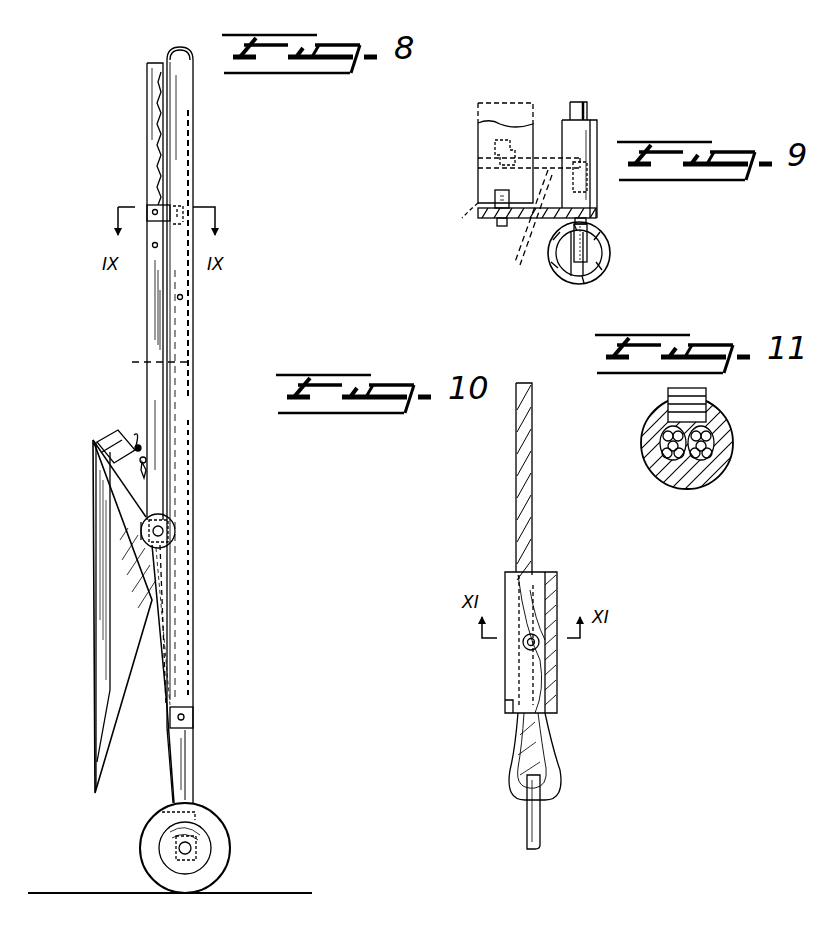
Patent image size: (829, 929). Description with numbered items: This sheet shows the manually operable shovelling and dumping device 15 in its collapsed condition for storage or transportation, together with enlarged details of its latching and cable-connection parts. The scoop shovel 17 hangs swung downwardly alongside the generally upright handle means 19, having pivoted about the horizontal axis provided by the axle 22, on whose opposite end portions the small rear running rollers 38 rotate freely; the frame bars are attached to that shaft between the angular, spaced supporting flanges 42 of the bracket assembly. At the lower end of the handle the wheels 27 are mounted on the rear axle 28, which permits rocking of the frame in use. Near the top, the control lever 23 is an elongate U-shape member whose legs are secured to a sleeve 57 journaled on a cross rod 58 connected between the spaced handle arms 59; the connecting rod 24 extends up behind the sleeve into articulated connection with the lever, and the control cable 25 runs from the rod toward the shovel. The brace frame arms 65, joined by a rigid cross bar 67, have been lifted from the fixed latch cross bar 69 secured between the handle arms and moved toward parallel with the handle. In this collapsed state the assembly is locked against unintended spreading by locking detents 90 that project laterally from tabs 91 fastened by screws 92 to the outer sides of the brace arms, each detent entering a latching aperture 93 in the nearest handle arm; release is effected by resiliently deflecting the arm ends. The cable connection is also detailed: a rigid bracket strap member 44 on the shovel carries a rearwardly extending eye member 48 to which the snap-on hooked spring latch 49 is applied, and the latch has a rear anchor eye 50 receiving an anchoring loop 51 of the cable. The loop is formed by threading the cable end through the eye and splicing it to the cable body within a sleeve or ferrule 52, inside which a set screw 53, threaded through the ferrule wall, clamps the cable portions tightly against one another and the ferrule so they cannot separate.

In FIG. 8, the shovelling and dumping device 15 is at (207, 512).
In FIG. 8, the scoop shovel 17 is at (90, 642).
In FIG. 8, the handle means 19 is at (180, 55).
In FIG. 8, the axle 22 is at (162, 534).
In FIG. 8, the control lever 23 is at (180, 44).
In FIG. 8, the connecting rod 24 is at (146, 360).
In FIG. 8, the control cable 25 is at (136, 483).
In FIG. 10, the control cable 25 is at (517, 495).
In FIG. 11, the control cable 25 is at (668, 440).
In FIG. 8, the wheels 27 is at (207, 822).
In FIG. 8, the axle 28 is at (192, 845).
In FIG. 8, the rear running rollers 38 is at (167, 531).
In FIG. 8, the supporting flanges 42 is at (143, 528).
In FIG. 8, the bracket strap member 44 is at (110, 437).
In FIG. 8, the eye member 48 is at (134, 440).
In FIG. 8, the hooked spring latch 49 is at (146, 452).
In FIG. 10, the anchor eye 50 is at (528, 820).
In FIG. 10, the anchoring loop 51 is at (553, 770).
In FIG. 8, the ferrule 52 is at (147, 470).
In FIG. 10, the ferrule 52 is at (557, 598).
In FIG. 11, the ferrule 52 is at (690, 488).
In FIG. 10, the set screw 53 is at (524, 648).
In FIG. 11, the set screw 53 is at (702, 396).
In FIG. 9, the sleeve 57 is at (584, 132).
In FIG. 9, the cross rod 58 is at (576, 255).
In FIG. 9, the handle arms 59 is at (608, 262).
In FIG. 8, the brace frame arms 65 is at (150, 300).
In FIG. 9, the brace frame arms 65 is at (478, 210).
In FIG. 9, the cross bar 67 is at (480, 148).
In FIG. 8, the latch cross bar 69 is at (194, 712).
In FIG. 9, the locking detents 90 is at (598, 190).
In FIG. 8, the tabs 91 is at (160, 210).
In FIG. 9, the tabs 91 is at (527, 219).
In FIG. 9, the screws 92 is at (500, 228).
In FIG. 9, the latching aperture 93 is at (590, 220).